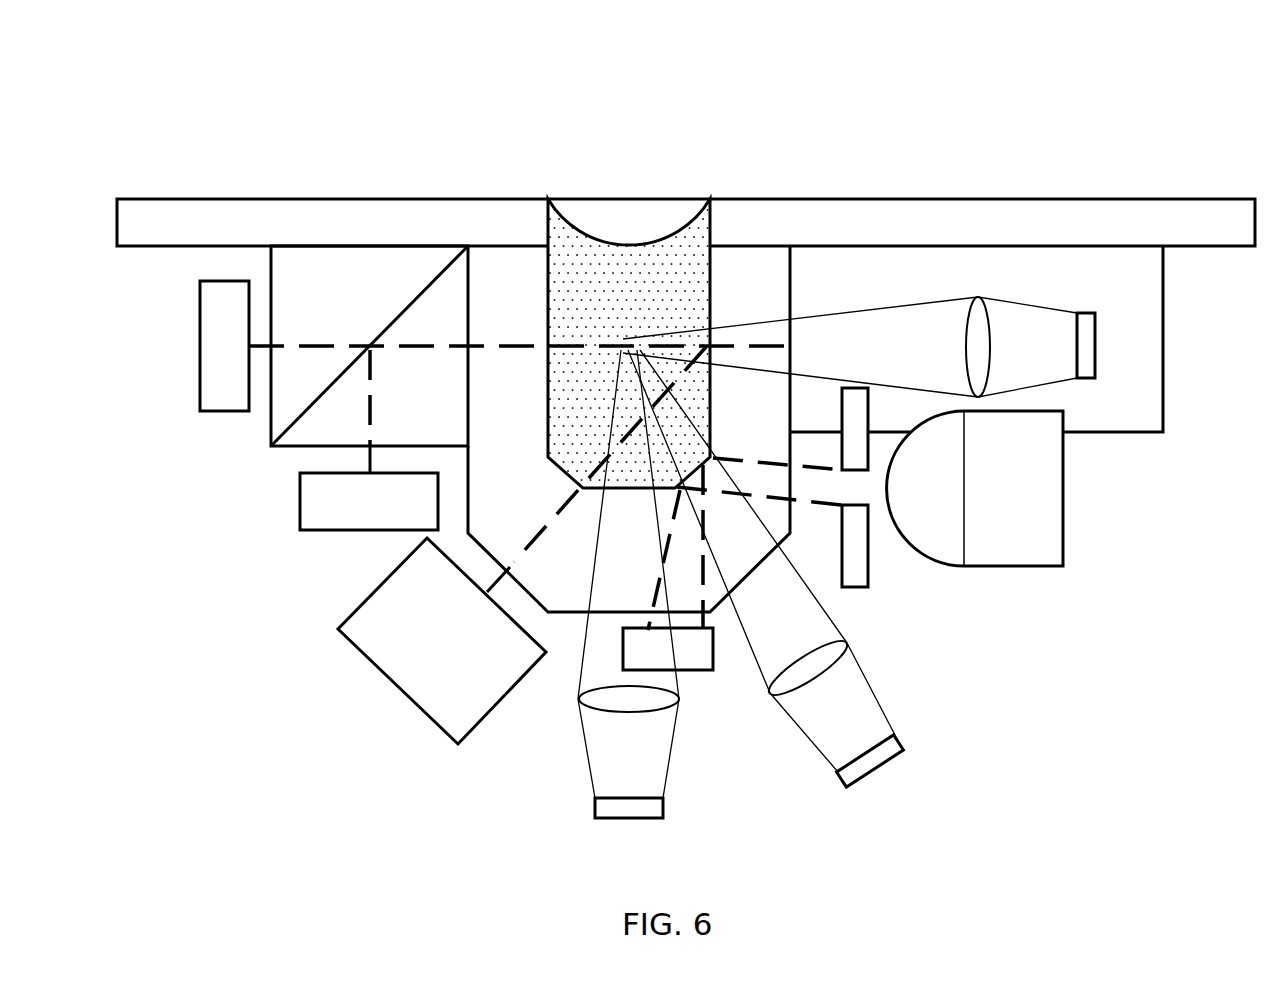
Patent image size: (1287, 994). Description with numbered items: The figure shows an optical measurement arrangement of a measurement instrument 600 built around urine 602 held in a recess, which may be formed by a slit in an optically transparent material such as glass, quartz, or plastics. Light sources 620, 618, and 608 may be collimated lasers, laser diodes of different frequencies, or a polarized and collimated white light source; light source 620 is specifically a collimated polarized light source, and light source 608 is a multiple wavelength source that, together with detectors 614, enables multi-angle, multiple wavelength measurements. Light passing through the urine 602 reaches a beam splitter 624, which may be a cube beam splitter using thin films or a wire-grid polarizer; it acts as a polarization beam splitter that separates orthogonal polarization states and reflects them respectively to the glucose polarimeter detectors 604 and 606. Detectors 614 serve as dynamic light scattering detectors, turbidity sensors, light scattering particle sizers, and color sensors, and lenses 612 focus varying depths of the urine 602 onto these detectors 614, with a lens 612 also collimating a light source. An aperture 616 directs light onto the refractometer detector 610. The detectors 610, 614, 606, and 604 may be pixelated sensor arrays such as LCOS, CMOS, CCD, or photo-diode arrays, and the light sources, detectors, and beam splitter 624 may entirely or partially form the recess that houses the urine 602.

The measurement instrument 600 is at (166, 70).
The urine 602 is at (603, 243).
The glucose polarimeter detector 604 is at (200, 333).
The glucose polarimeter detector 606 is at (369, 488).
The multiple wavelength light source 608 is at (442, 641).
The refractometer detector 610 is at (668, 649).
The lens 612 is at (966, 341).
The detector 614 is at (1095, 355).
The aperture 616 is at (868, 578).
The light source 618 is at (975, 488).
The collimated polarized light source 620 is at (1163, 303).
The beam splitter 624 is at (369, 346).